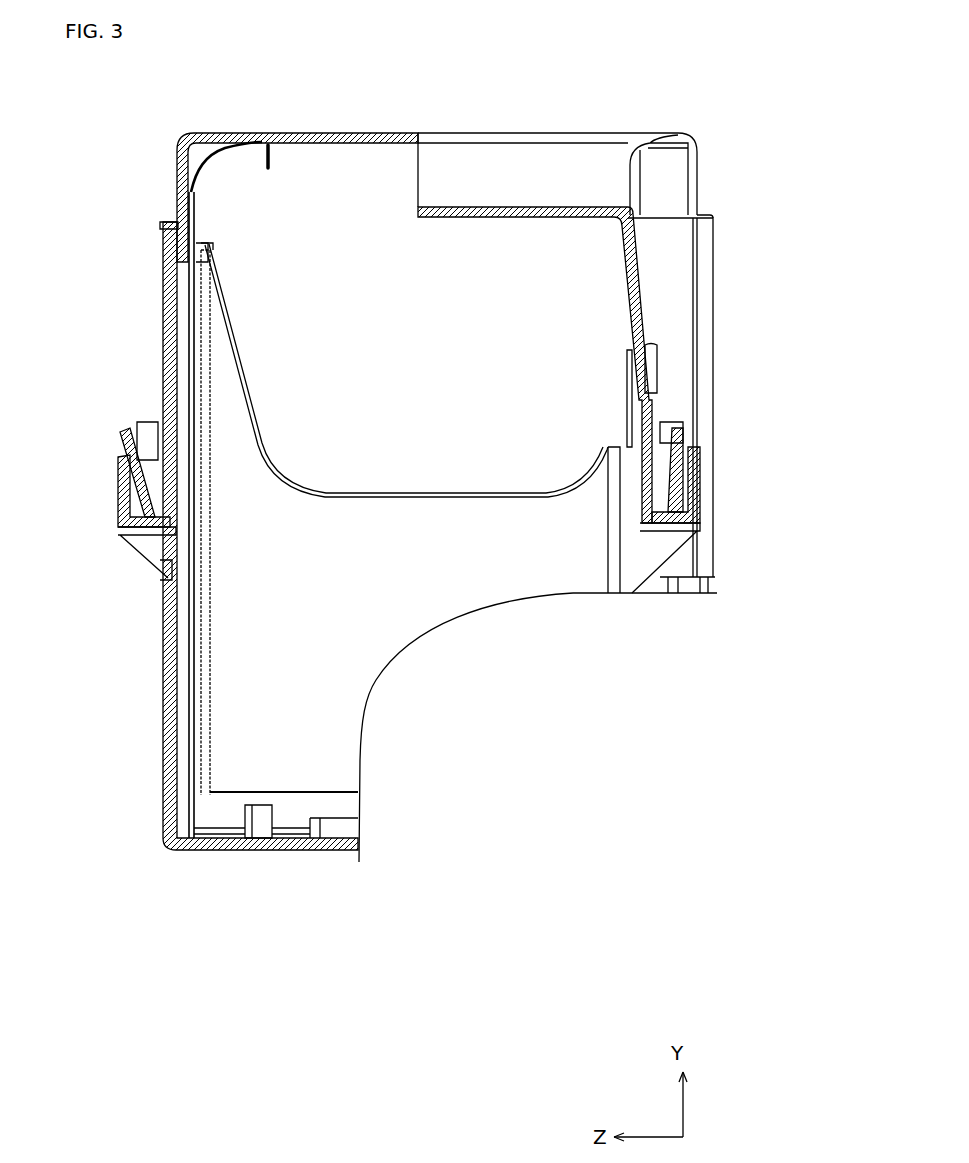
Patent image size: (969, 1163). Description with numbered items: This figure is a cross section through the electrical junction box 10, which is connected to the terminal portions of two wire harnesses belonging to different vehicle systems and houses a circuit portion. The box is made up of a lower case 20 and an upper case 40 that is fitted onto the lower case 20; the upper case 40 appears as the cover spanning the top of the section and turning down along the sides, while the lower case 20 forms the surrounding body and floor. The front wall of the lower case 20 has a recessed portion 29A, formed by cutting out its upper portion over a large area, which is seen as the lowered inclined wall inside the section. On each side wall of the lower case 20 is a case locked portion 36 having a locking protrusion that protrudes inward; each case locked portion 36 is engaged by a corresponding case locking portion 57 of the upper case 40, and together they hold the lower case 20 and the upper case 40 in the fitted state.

The electrical junction box 10 is at (657, 97).
The lower case 20 is at (277, 850).
The upper case 40 is at (252, 133).
The recessed portion 29A is at (345, 493).
The case locked portion 36 is at (118, 512).
The case locking portion 57 is at (118, 458).